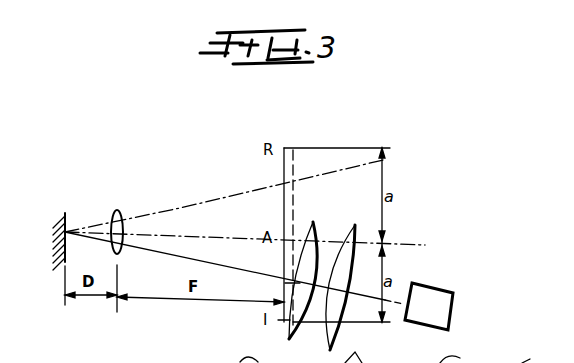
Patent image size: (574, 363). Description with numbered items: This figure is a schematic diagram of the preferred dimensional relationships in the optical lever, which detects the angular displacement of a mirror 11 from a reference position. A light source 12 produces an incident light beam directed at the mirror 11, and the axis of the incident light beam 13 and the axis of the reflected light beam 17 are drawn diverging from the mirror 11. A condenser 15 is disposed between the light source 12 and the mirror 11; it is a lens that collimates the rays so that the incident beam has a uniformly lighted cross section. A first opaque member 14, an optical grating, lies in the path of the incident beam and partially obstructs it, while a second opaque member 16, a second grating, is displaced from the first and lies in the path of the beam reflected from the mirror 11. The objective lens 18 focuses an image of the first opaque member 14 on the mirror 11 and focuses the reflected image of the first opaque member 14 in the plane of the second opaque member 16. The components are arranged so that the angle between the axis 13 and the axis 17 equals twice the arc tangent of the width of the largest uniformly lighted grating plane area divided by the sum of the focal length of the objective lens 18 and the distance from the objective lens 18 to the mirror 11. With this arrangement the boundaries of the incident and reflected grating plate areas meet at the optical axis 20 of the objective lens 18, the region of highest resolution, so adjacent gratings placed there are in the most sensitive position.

The mirror 11 is at (68, 222).
The light source 12 is at (432, 294).
The axis of the incident light beam 13 is at (247, 268).
The first opaque member 14 is at (283, 283).
The condenser 15 is at (323, 325).
The second opaque member 16 is at (290, 179).
The axis of the reflected light beam 17 is at (196, 205).
The objective lens 18 is at (118, 210).
The optical axis 20 is at (227, 236).